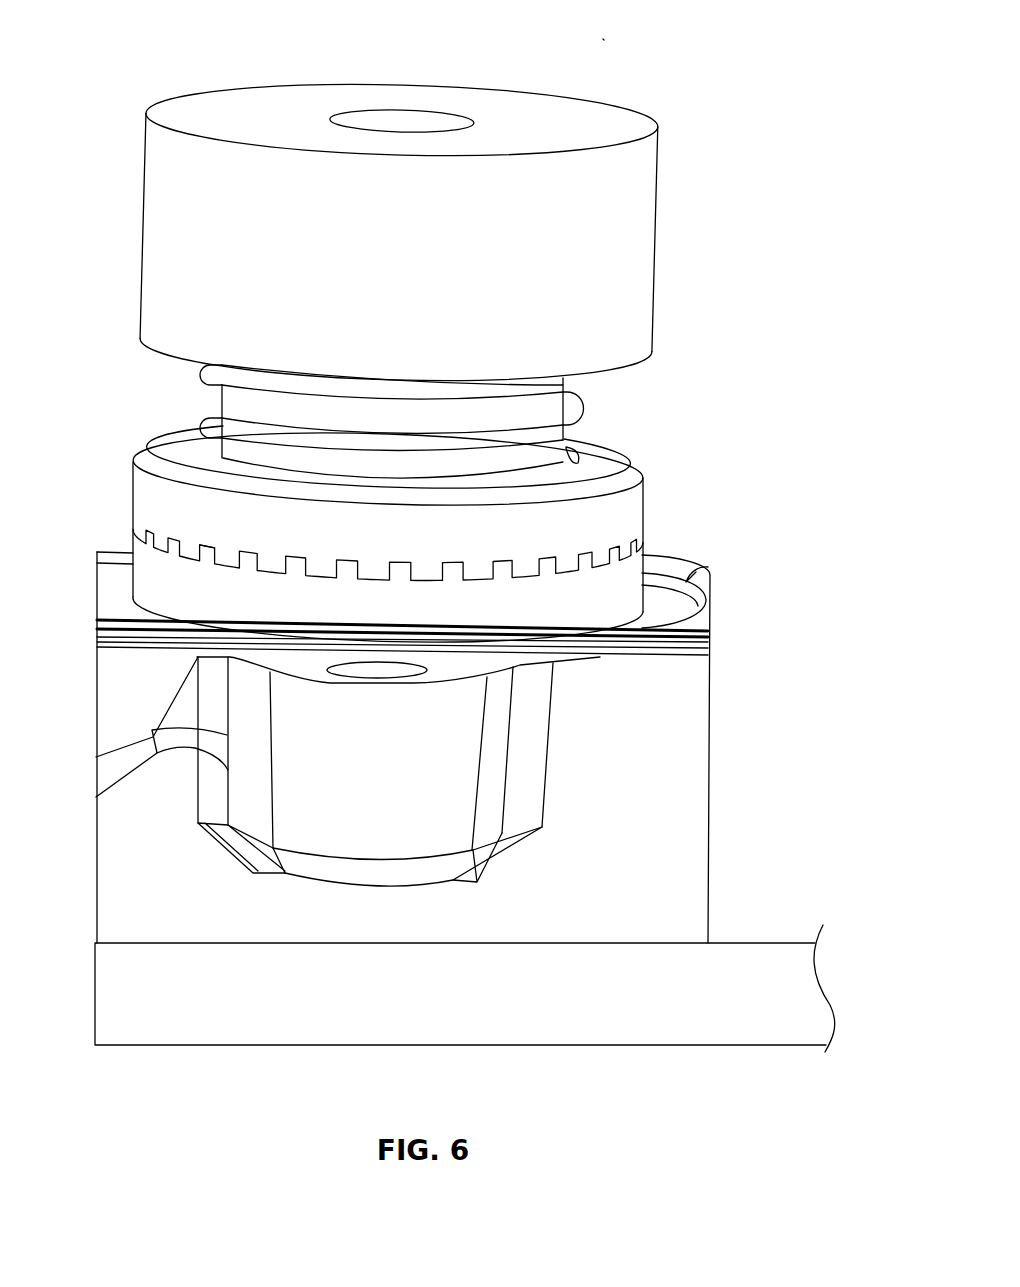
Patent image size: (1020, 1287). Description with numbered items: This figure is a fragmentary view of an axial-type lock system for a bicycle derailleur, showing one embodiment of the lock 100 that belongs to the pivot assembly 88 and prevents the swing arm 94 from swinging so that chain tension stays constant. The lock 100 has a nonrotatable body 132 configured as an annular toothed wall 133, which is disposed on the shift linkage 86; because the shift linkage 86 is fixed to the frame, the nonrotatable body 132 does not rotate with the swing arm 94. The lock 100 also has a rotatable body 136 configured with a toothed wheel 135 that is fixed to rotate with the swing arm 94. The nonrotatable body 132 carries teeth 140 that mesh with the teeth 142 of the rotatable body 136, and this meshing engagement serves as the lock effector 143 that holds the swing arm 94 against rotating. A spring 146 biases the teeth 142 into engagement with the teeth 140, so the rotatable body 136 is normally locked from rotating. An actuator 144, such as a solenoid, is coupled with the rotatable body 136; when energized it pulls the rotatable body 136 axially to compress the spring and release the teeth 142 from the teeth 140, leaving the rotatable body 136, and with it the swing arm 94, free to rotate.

The pivot assembly 88 is at (606, 38).
The actuator 144 is at (384, 270).
The spring 146 is at (584, 406).
The lock 100 is at (657, 537).
The rotatable body 136 is at (570, 478).
The toothed wheel 135 is at (461, 535).
The nonrotatable body 132 is at (551, 610).
The annular toothed wall 133 is at (197, 587).
The teeth 140 is at (208, 541).
The shift linkage 86 is at (116, 713).
The lock effector 143 is at (413, 614).
The teeth 142 is at (273, 575).
The swing arm 94 is at (604, 1017).